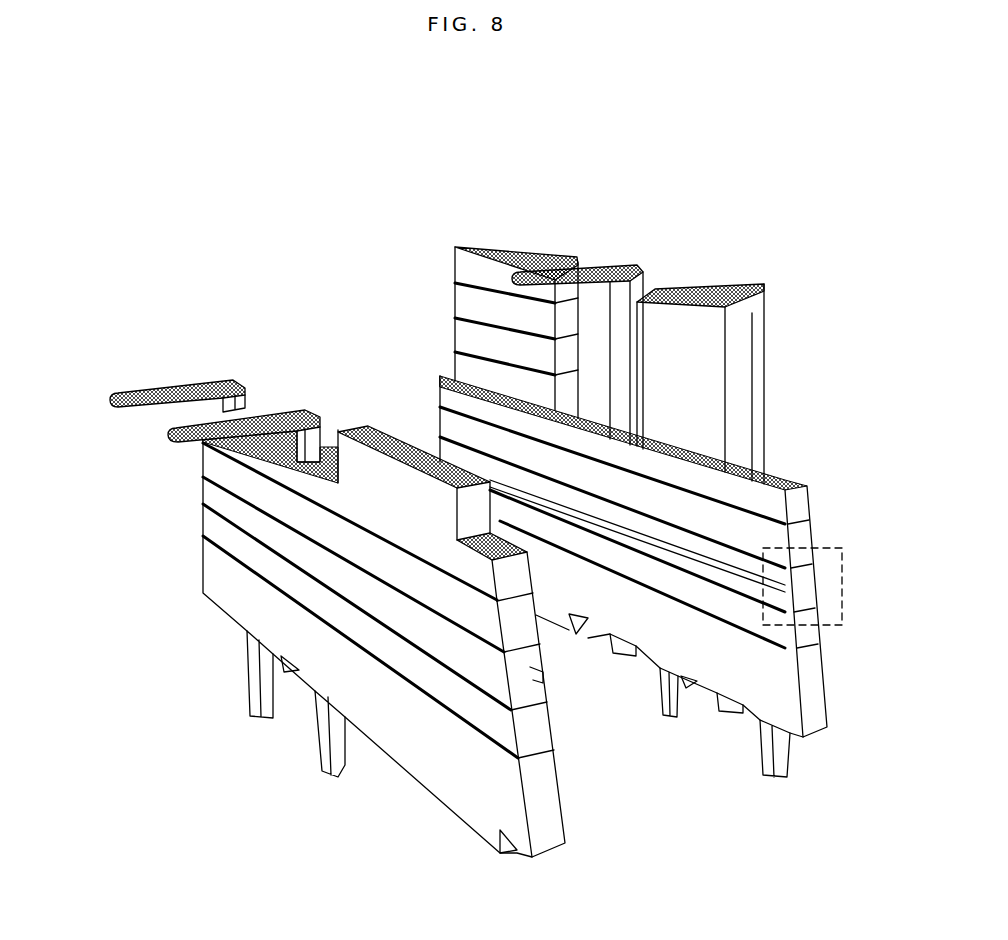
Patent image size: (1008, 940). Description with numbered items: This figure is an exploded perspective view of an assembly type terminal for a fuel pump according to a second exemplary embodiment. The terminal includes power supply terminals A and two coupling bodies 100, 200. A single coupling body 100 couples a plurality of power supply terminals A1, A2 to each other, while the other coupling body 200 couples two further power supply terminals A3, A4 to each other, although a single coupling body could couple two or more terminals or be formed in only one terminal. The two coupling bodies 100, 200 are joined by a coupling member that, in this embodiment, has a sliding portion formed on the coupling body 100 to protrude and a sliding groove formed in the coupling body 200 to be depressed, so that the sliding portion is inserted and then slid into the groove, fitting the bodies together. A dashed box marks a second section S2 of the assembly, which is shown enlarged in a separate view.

The coupling body 100 is at (478, 255).
The coupling body 200 is at (218, 577).
The power supply terminals A is at (725, 137).
The power supply terminal A1 is at (602, 270).
The power supply terminal A2 is at (698, 292).
The power supply terminal A3 is at (210, 390).
The power supply terminal A4 is at (300, 413).
The second section S2 is at (818, 548).